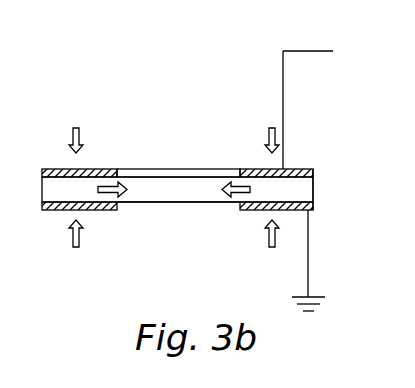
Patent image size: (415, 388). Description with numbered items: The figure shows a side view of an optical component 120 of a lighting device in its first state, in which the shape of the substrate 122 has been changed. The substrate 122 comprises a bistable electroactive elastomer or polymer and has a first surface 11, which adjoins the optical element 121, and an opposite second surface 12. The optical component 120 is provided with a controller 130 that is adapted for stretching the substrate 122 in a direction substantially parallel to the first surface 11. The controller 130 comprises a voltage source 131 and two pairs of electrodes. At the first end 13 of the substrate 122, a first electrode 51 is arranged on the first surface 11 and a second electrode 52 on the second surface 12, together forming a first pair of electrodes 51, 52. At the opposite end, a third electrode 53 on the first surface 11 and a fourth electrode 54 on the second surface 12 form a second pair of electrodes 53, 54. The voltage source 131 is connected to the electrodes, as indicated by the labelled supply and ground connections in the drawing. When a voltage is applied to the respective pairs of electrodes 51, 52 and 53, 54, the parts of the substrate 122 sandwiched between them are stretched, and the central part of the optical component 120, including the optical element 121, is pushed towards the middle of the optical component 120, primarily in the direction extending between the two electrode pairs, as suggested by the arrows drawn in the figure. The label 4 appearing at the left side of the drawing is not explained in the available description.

The electrode assembly 4 is at (42, 193).
The first surface 11 is at (147, 178).
The second surface 12 is at (170, 202).
The first end 13 is at (316, 186).
The first electrode 51 is at (292, 169).
The second electrode 52 is at (300, 211).
The third electrode 53 is at (90, 169).
The fourth electrode 54 is at (62, 210).
The optical component 120 is at (320, 198).
The optical element 121 is at (173, 176).
The substrate 122 is at (205, 187).
The controller 130 is at (334, 84).
The voltage source 131 is at (313, 51).